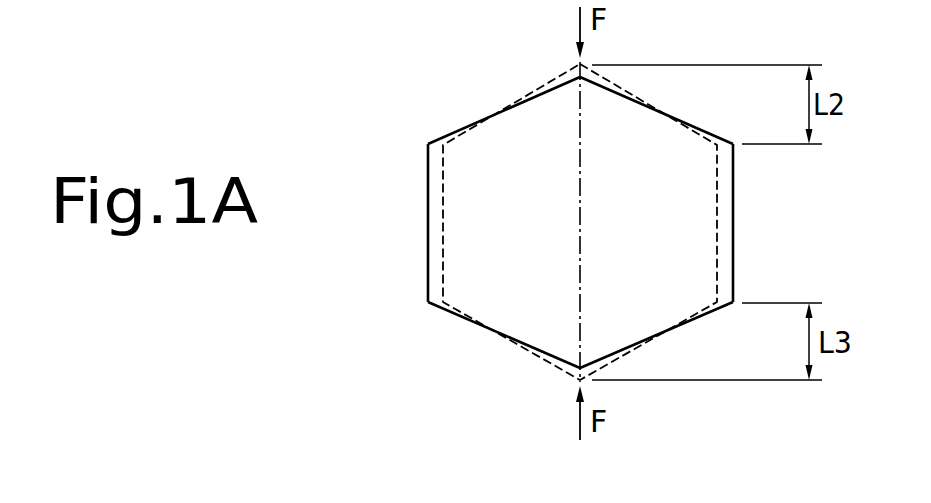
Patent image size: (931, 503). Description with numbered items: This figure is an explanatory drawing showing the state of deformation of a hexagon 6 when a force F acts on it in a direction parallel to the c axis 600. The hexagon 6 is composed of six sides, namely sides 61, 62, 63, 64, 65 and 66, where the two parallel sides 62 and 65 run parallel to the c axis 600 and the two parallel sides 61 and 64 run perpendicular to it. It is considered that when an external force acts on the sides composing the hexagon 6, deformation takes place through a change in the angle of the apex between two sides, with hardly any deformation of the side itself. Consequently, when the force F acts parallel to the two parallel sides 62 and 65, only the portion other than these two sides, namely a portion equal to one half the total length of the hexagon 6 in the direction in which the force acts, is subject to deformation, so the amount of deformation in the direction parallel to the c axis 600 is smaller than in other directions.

The hexagon 6 is at (560, 235).
The side 61 is at (488, 117).
The side 62 is at (428, 217).
The side 63 is at (489, 331).
The side 64 is at (668, 331).
The side 65 is at (733, 215).
The side 66 is at (650, 107).
The c axis 600 is at (580, 185).